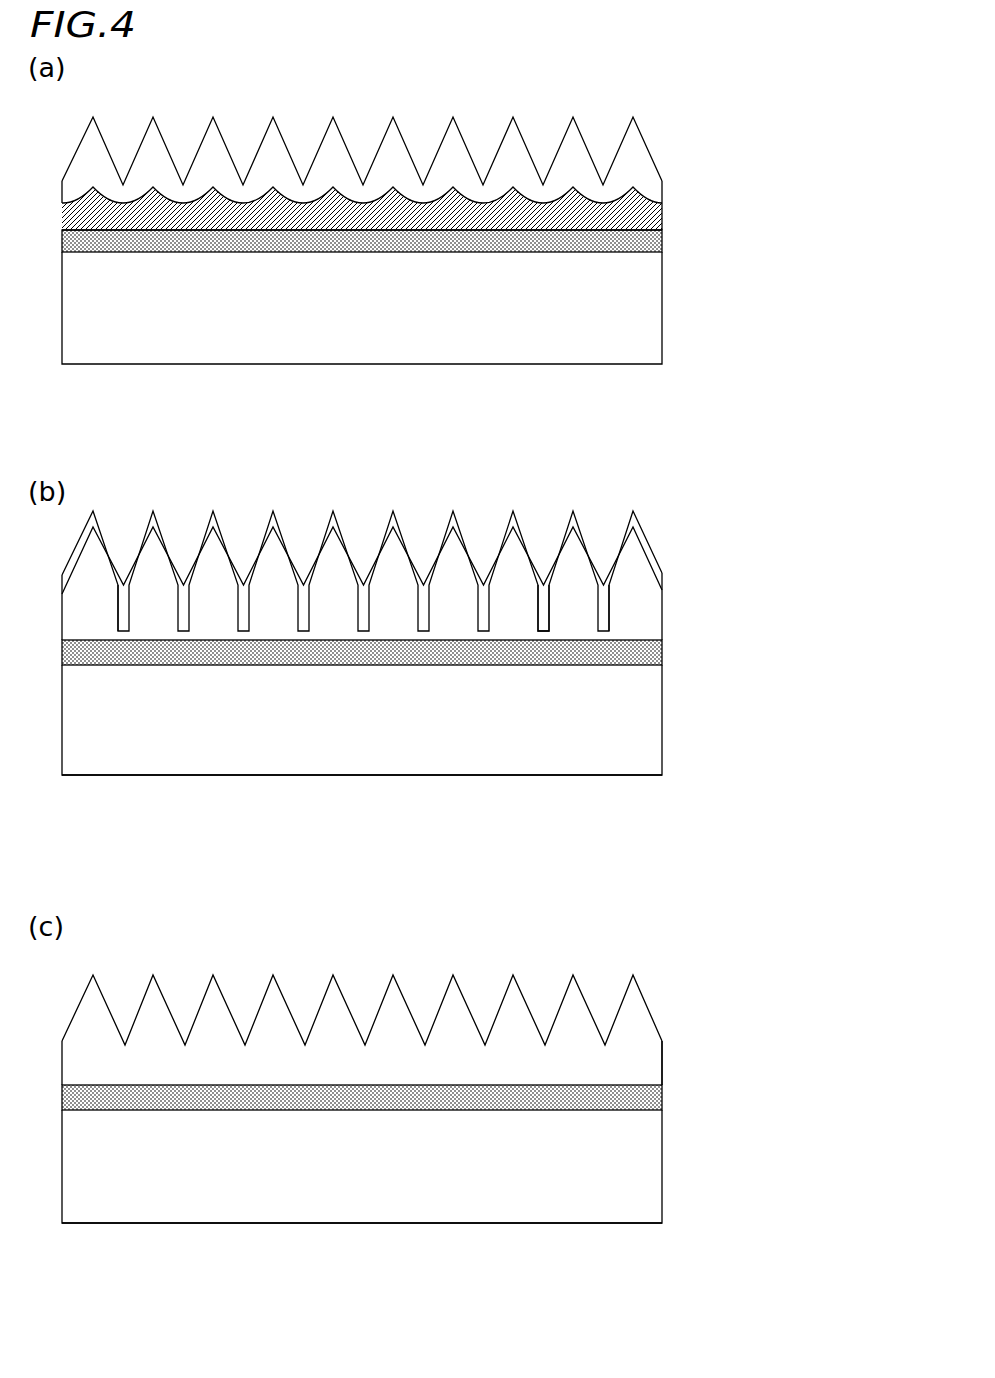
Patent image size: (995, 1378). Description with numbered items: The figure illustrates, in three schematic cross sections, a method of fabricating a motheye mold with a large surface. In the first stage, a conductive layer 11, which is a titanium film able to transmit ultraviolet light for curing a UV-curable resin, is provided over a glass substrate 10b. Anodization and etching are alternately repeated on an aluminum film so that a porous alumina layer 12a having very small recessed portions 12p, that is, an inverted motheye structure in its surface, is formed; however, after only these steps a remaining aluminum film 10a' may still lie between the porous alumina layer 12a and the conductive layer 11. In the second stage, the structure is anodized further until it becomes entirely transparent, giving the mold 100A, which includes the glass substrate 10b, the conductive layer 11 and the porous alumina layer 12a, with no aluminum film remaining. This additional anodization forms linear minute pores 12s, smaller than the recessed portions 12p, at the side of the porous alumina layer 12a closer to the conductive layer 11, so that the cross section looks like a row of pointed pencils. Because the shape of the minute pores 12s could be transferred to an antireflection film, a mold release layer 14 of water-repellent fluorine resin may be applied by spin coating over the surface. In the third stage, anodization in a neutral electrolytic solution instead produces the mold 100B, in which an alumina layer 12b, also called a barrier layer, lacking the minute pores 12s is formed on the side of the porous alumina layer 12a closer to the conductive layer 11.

The recessed portions 12p is at (539, 122).
The porous alumina layer 12a is at (643, 153).
The aluminum film 10a' is at (423, 207).
The conductive layer 11 is at (655, 240).
The glass substrate 10b is at (650, 315).
The mold release layer 14 is at (397, 520).
The minute pores 12s is at (547, 604).
The motheye mold 100A is at (722, 537).
The motheye mold 100B is at (710, 984).
The alumina layer 12b is at (677, 1037).